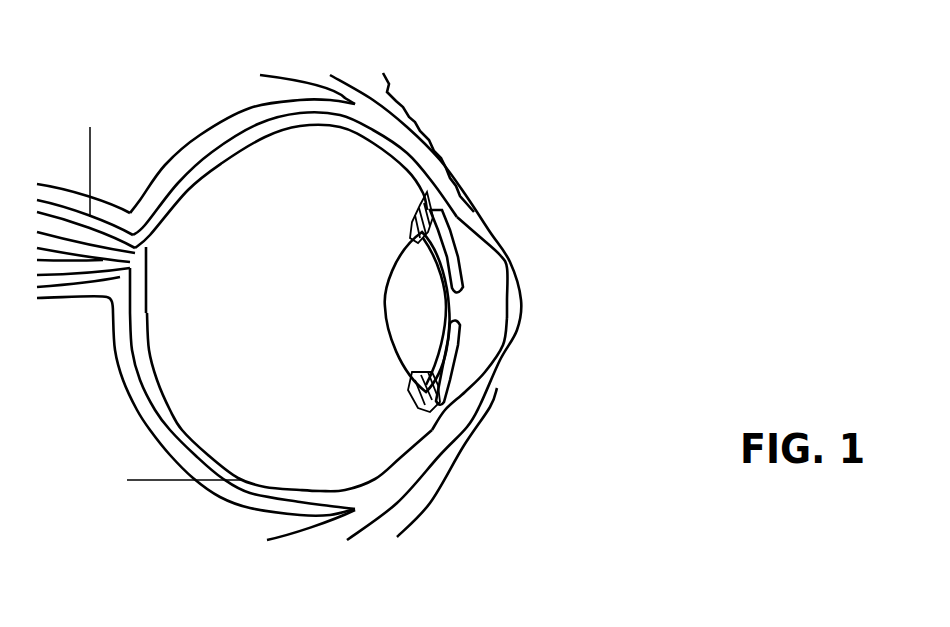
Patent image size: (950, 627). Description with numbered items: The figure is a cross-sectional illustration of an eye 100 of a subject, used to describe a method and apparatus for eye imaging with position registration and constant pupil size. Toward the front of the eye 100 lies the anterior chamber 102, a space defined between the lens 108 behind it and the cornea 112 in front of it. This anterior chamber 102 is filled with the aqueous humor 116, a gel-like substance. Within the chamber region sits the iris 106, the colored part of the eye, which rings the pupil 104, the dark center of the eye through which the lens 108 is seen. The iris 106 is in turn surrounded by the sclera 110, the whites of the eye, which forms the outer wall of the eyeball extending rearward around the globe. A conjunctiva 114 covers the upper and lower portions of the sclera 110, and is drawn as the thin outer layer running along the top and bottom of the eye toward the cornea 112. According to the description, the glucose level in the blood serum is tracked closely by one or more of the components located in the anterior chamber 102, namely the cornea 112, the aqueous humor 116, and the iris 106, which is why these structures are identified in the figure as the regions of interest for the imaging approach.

The eye 100 is at (660, 507).
The anterior chamber 102 is at (583, 216).
The pupil 104 is at (457, 307).
The iris 106 is at (457, 357).
The lens 108 is at (395, 307).
The sclera 110 is at (445, 432).
The cornea 112 is at (506, 370).
The conjunctiva 114 is at (410, 120).
The aqueous humor 116 is at (497, 295).